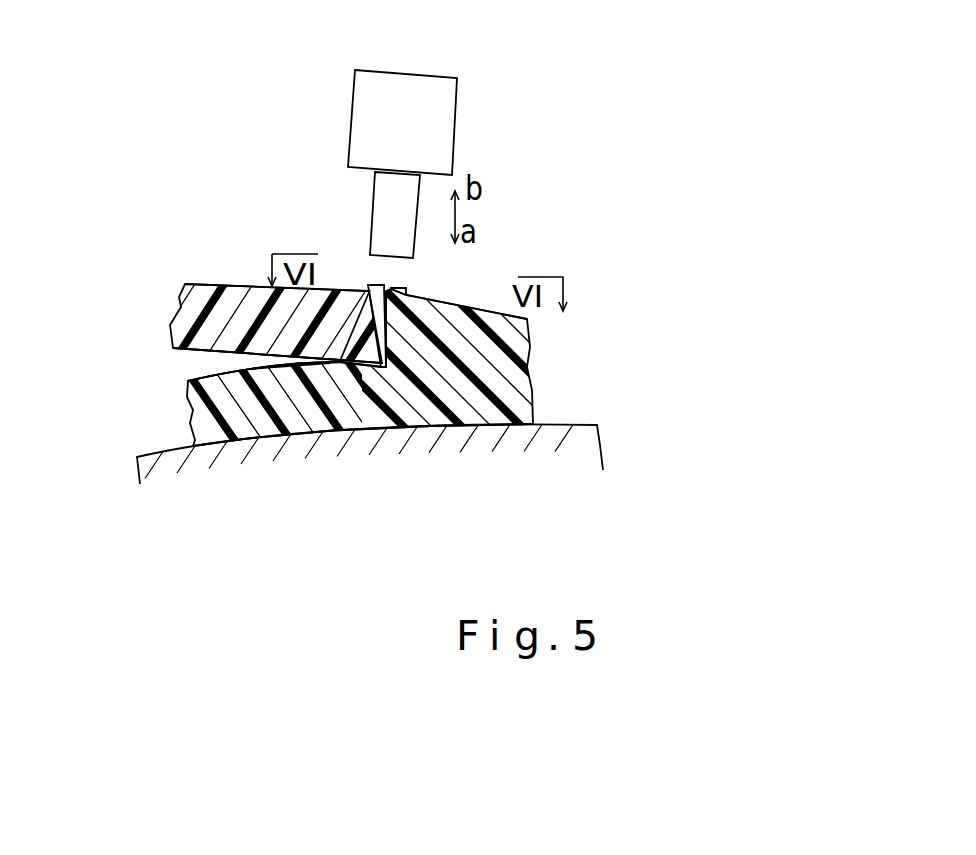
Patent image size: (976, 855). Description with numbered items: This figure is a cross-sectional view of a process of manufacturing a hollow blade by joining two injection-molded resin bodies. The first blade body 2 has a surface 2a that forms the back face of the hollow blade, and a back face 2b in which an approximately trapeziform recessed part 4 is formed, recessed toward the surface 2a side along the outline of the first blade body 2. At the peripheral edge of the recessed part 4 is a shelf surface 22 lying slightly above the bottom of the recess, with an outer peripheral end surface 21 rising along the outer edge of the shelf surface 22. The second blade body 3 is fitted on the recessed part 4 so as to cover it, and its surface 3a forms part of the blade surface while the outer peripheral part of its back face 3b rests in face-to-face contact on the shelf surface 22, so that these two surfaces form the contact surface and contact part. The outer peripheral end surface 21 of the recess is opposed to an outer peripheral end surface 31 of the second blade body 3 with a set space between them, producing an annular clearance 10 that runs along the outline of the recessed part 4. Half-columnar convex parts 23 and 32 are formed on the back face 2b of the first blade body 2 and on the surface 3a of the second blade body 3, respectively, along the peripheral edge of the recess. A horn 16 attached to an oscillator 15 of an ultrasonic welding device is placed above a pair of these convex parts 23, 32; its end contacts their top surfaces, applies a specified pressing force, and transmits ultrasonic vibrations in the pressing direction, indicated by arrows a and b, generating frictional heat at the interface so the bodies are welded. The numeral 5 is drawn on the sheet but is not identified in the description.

The first blade body 2 is at (275, 378).
The surface of the first blade body 2a is at (240, 443).
The back face of the first blade body 2b is at (190, 380).
The second blade body 3 is at (202, 307).
The surface of the second blade body 3a is at (230, 284).
The back face of the second blade body 3b is at (173, 350).
The recessed part 4 is at (284, 405).
The gap between plates 5 is at (205, 363).
The annular clearance 10 is at (492, 427).
The oscillator 15 is at (459, 97).
The horn 16 is at (385, 198).
The outer peripheral end surface 21 is at (375, 348).
The shelf surface 22 is at (343, 360).
The convex part 23 is at (400, 288).
The outer peripheral end surface of the second blade body 31 is at (395, 300).
The convex part 32 is at (372, 284).